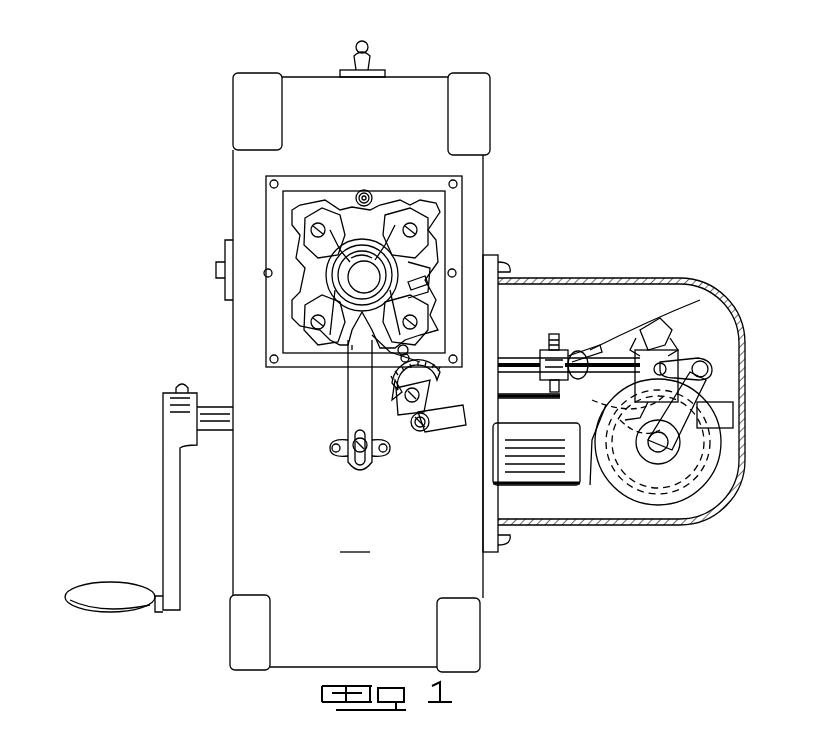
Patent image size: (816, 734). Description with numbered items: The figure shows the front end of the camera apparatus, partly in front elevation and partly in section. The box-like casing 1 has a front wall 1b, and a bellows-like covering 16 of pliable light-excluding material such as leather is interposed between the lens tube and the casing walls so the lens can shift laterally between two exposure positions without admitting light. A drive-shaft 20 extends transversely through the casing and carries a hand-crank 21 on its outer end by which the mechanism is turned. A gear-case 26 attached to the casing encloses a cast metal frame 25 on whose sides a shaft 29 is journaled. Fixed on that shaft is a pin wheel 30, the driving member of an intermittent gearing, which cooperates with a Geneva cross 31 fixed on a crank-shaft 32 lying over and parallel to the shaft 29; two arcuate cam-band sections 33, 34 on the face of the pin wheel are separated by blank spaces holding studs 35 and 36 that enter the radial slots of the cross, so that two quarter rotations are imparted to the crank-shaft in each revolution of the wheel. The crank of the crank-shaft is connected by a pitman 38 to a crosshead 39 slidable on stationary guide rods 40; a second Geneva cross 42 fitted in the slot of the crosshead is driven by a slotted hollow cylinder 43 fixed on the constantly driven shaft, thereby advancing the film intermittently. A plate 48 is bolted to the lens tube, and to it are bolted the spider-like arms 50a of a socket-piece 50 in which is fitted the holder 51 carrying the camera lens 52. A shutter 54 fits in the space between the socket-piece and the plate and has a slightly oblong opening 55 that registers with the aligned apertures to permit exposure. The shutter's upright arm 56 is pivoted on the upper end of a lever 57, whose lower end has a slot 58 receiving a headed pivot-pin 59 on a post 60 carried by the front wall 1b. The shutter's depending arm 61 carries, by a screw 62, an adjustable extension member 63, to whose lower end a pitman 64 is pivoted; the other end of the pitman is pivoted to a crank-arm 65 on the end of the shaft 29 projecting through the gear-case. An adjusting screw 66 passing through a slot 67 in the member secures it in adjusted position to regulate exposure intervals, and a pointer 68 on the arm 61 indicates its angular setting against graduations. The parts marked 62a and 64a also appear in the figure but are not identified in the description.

The casing 1 is at (246, 176).
The front wall of the casing 1b is at (355, 543).
The bellows-like covering 16 is at (437, 215).
The drive-shaft 20 is at (218, 416).
The hand-crank 21 is at (170, 519).
The cast metal frame 25 is at (640, 380).
The gear-case 26 is at (594, 282).
The shaft 29 is at (652, 448).
The pin wheel 30 is at (686, 490).
The Geneva cross 31 is at (680, 326).
The crank-shaft 32 is at (690, 362).
The arcuate cam-band section 33 is at (640, 485).
The arcuate cam-band section 34 is at (650, 402).
The stud 35 is at (705, 410).
The stud 36 is at (606, 414).
The connecting-rod or pitman 38 is at (610, 350).
The crosshead 39 is at (586, 358).
The guide rods 40 is at (516, 366).
The Geneva cross 42 is at (553, 335).
The hollow cylinder 43 is at (540, 482).
The plate 48 is at (397, 212).
The socket-piece 50 is at (340, 273).
The spider-like arms 50a is at (318, 380).
The holder 51 is at (346, 284).
The camera lens 52 is at (360, 290).
The shutter 54 is at (422, 285).
The oblong opening 55 is at (430, 270).
The upright arm 56 is at (372, 212).
The lever 57 is at (350, 410).
The slot 58 is at (360, 468).
The pivot-pin 59 is at (340, 452).
The post 60 is at (382, 454).
The depending arm 61 is at (400, 348).
The screw 62 is at (408, 395).
The ratchet tooth 62a is at (395, 385).
The adjustable extension member 63 is at (410, 420).
The bar or pitman 64 is at (460, 420).
The pivot pin 64a is at (708, 370).
The crank-arm 65 is at (690, 385).
The adjusting screw 66 is at (422, 396).
The slot 67 is at (432, 382).
The pointer 68 is at (412, 360).